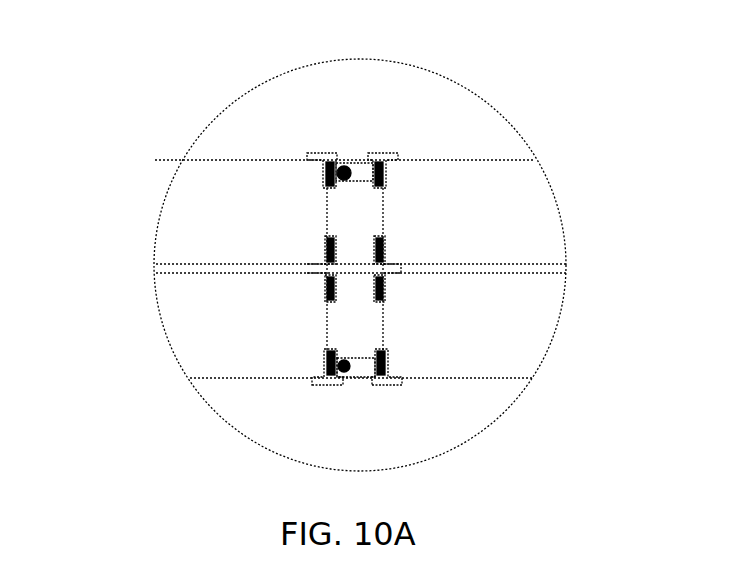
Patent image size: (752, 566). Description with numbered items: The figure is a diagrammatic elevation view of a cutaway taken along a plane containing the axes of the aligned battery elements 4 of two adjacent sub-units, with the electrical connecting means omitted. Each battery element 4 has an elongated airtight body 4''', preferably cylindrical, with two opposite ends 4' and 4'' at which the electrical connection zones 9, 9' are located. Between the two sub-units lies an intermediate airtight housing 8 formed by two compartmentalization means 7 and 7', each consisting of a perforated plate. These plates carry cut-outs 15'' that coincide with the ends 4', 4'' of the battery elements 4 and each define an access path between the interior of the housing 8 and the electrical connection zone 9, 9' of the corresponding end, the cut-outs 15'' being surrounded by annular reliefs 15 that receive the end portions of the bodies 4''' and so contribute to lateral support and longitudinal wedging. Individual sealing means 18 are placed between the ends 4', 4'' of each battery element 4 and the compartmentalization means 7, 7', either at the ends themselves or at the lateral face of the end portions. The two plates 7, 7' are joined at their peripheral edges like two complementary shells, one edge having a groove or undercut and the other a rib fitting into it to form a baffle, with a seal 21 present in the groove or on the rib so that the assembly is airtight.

The relief 15 is at (477, 139).
The cut-out 15'' is at (453, 136).
The airtight housing 8 is at (357, 231).
The individual sealing means 18 is at (323, 283).
The battery element 4 is at (178, 247).
The elongated airtight body 4''' is at (208, 288).
The end 4' is at (210, 345).
The end 4'' is at (494, 342).
The electrical connection zone 9 is at (231, 381).
The electrical connection zone 9' is at (480, 374).
The compartmentalization means 7 is at (259, 416).
The compartmentalization means 7' is at (452, 426).
The seal 21 is at (347, 380).